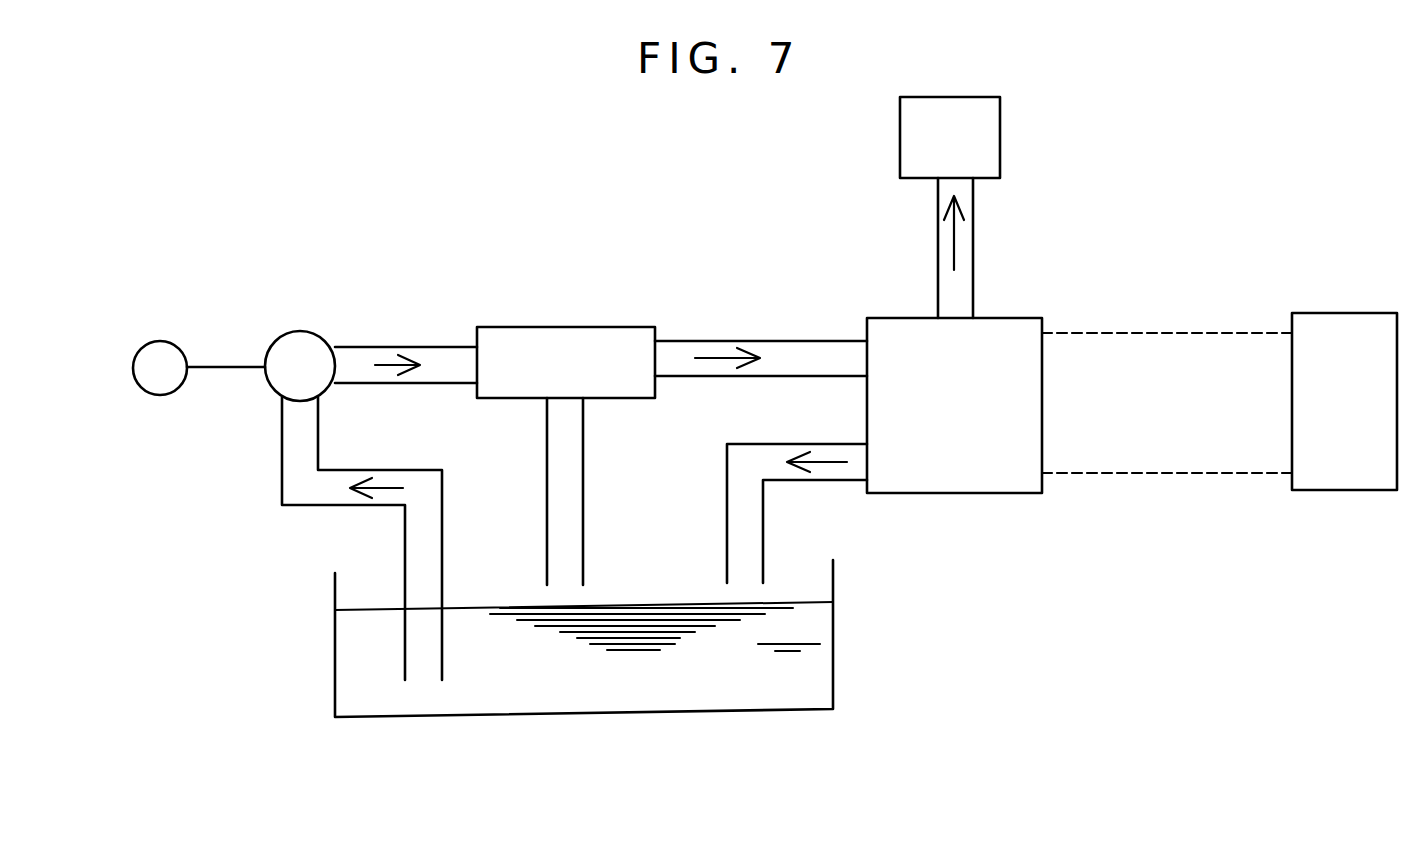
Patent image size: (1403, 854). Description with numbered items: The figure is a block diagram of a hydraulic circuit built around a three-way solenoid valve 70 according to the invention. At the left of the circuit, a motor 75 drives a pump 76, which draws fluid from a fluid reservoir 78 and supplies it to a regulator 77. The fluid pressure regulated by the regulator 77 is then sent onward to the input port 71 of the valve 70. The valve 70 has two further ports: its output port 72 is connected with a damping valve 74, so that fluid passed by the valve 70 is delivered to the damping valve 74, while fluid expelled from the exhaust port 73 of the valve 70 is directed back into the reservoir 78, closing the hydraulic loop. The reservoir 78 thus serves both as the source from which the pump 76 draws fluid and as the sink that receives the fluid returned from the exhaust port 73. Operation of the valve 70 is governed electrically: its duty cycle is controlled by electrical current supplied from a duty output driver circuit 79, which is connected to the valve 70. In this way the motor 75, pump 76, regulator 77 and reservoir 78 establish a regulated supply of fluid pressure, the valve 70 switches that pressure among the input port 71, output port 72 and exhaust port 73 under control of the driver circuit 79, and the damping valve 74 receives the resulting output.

The three-way solenoid valve 70 is at (1012, 480).
The input port 71 is at (866, 355).
The output port 72 is at (948, 316).
The exhaust port 73 is at (866, 462).
The damping valve 74 is at (1000, 150).
The motor 75 is at (188, 352).
The pump 76 is at (329, 345).
The regulator 77 is at (620, 327).
The fluid reservoir 78 is at (685, 678).
The duty output driver circuit 79 is at (1358, 478).